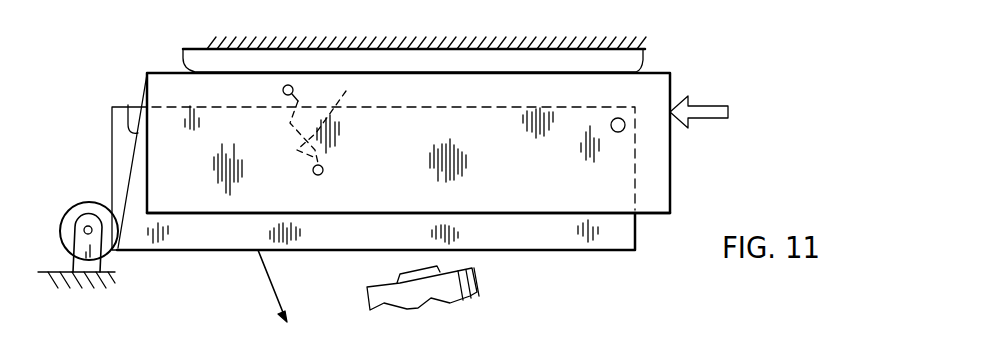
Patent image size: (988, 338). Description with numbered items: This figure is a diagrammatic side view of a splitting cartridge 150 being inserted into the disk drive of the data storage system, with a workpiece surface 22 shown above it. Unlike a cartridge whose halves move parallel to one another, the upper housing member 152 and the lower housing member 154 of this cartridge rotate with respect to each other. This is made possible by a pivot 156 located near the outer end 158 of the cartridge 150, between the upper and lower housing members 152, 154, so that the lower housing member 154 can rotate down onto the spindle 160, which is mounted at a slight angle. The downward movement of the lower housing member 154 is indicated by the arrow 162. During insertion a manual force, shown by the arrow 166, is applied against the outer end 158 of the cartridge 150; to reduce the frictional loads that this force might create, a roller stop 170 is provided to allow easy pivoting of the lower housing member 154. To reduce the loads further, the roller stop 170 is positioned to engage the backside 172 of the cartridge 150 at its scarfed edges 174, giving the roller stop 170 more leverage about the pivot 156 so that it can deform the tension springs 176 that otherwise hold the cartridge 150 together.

The workpiece / conveyor belt 22 is at (648, 51).
The splitting cartridge 150 is at (659, 72).
The upper housing member 152 is at (655, 207).
The lower housing member 154 is at (560, 242).
The pivot 156 is at (625, 128).
The outer end 158 is at (673, 192).
The spindle 160 is at (480, 280).
The arrow 162 is at (268, 290).
The arrow 166 is at (710, 105).
The roller stop 170 is at (78, 205).
The backside 172 is at (112, 145).
The scarfed edges 174 is at (128, 105).
The tension springs 176 is at (350, 87).